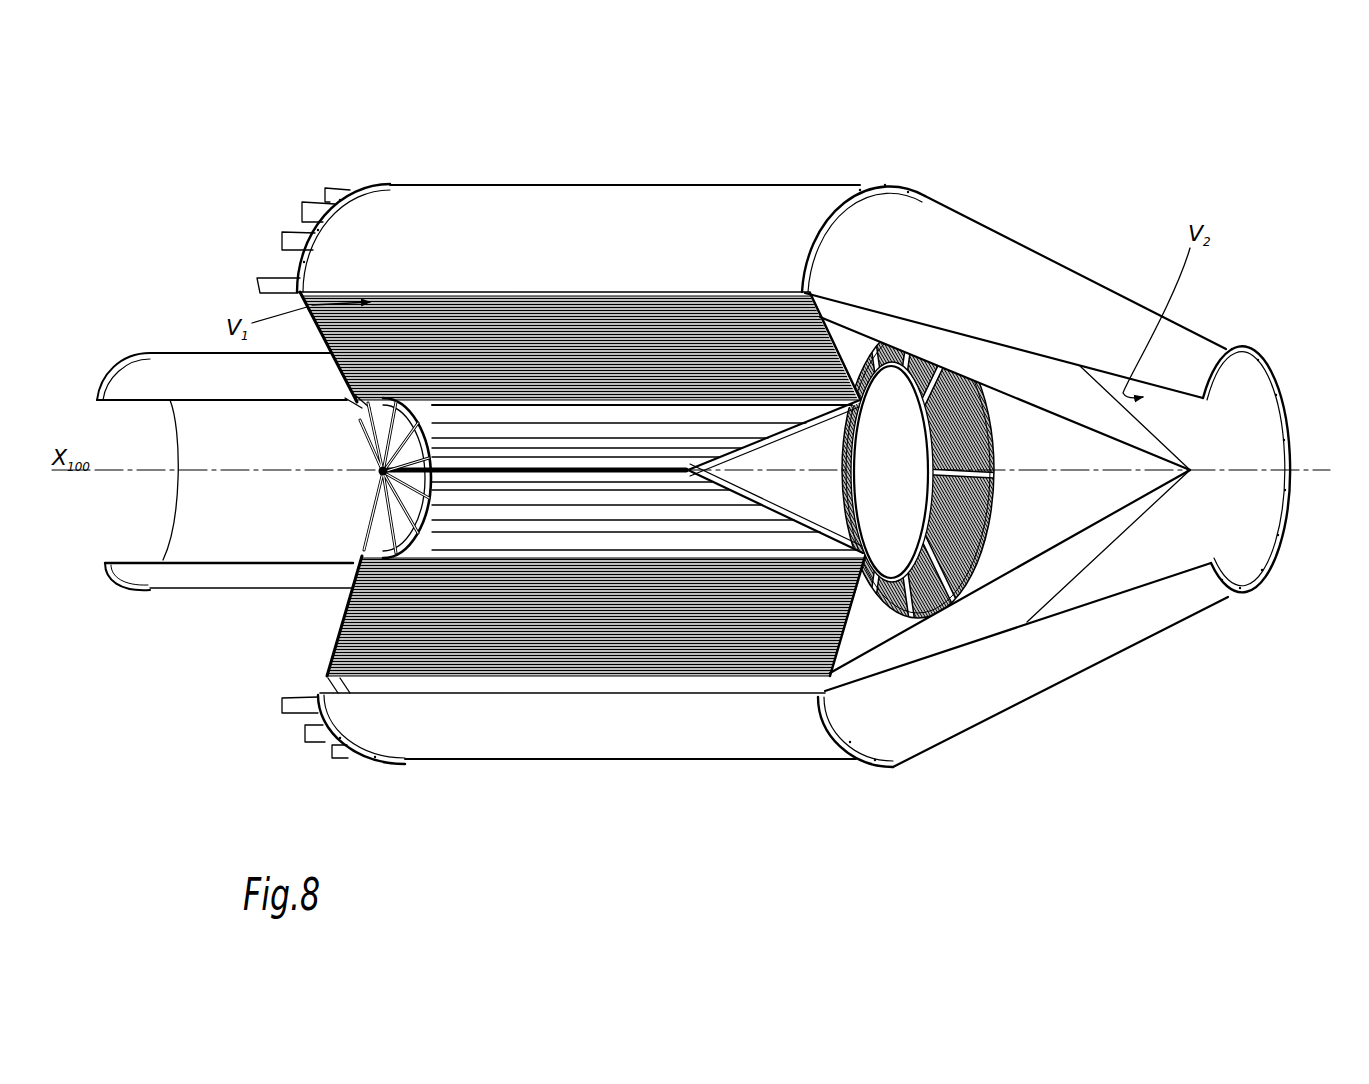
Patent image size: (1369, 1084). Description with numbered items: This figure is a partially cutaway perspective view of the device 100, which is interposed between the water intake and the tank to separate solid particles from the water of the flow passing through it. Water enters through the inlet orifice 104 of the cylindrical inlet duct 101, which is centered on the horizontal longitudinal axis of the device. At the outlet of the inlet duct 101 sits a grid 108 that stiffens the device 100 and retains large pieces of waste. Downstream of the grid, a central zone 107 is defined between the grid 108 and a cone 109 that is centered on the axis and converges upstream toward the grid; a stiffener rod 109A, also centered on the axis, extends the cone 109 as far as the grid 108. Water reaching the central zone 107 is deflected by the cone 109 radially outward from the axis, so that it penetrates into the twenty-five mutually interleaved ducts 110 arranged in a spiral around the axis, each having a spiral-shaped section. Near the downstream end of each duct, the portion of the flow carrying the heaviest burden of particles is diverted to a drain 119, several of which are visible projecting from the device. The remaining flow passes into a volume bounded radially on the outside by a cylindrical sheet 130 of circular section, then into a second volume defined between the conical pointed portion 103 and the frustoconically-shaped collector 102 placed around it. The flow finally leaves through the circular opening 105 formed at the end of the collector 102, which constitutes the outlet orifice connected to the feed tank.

The device 100 is at (1090, 210).
The inlet duct 101 is at (180, 577).
The collector 102 is at (1078, 645).
The pointed portion 103 is at (1100, 542).
The inlet orifice 104 is at (118, 436).
The circular opening 105 is at (1243, 537).
The central zone 107 is at (593, 528).
The grid 108 is at (372, 523).
The cone 109 is at (793, 425).
The stiffener rod 109A is at (645, 462).
The ducts 110 is at (720, 641).
The drain 119 is at (307, 210).
The sheet 130 is at (612, 225).